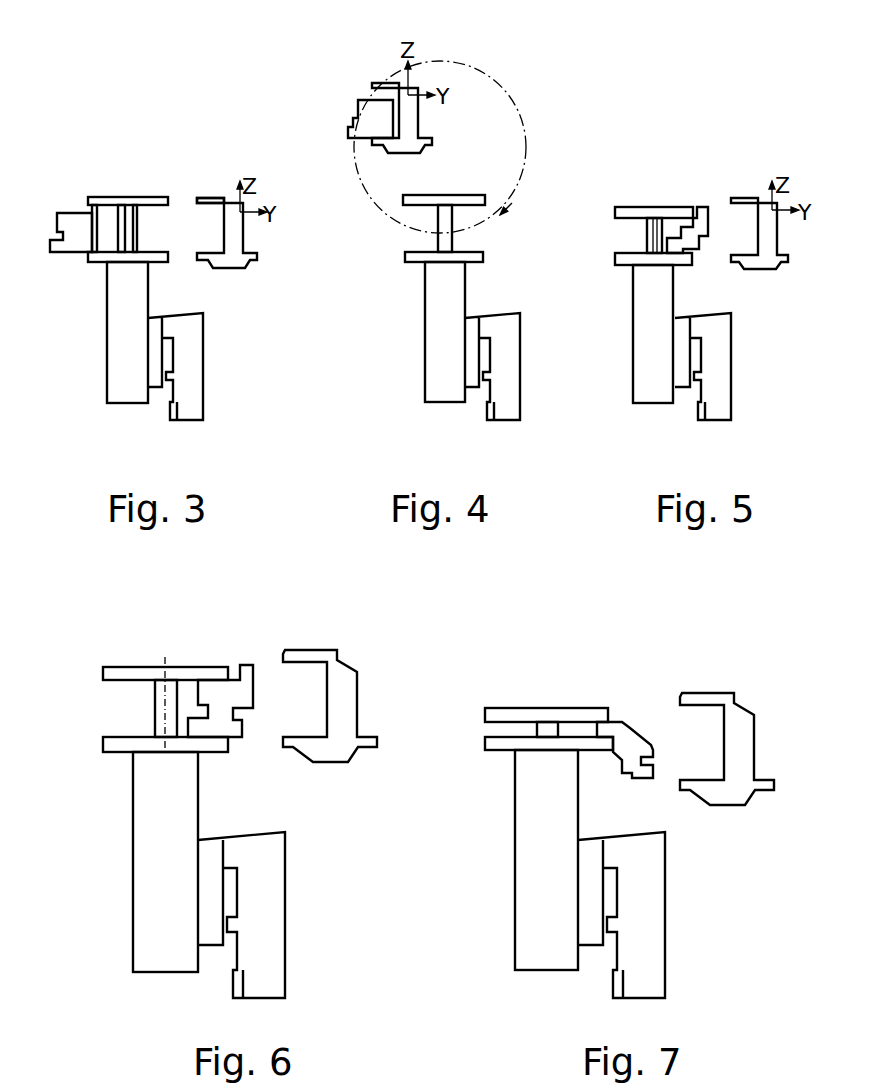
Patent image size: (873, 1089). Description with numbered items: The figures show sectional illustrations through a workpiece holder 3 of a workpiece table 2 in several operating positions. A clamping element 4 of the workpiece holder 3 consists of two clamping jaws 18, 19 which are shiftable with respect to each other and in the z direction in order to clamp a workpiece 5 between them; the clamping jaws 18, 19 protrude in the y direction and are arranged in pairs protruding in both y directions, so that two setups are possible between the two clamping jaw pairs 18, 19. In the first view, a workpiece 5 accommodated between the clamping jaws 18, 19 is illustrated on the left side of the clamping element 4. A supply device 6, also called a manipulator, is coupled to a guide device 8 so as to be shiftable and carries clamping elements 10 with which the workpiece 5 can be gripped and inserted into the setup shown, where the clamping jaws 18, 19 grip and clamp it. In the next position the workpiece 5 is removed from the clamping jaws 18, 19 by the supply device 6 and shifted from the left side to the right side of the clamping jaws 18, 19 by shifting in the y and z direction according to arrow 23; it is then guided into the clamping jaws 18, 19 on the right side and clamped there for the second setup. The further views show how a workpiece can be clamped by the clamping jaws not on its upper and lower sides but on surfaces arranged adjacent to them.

In FIG. 3, the workpiece table 2 is at (90, 355).
In FIG. 4, the workpiece table 2 is at (412, 410).
In FIG. 5, the workpiece table 2 is at (616, 412).
In FIG. 6, the workpiece table 2 is at (142, 895).
In FIG. 7, the workpiece table 2 is at (527, 895).
In FIG. 3, the workpiece holder 3 is at (127, 397).
In FIG. 4, the workpiece holder 3 is at (492, 366).
In FIG. 5, the workpiece holder 3 is at (703, 366).
In FIG. 6, the workpiece holder 3 is at (241, 915).
In FIG. 7, the workpiece holder 3 is at (621, 915).
In FIG. 3, the clamping element 4 is at (138, 163).
In FIG. 3, the workpiece 5 is at (80, 262).
In FIG. 4, the workpiece 5 is at (370, 119).
In FIG. 5, the workpiece 5 is at (706, 207).
In FIG. 6, the workpiece 5 is at (250, 665).
In FIG. 7, the workpiece 5 is at (640, 733).
In FIG. 3, the supply device 6 is at (243, 233).
In FIG. 4, the supply device 6 is at (420, 118).
In FIG. 5, the guide device 8 is at (766, 233).
In FIG. 3, the clamping elements 10 is at (213, 200).
In FIG. 6, the clamping elements 10 is at (342, 665).
In FIG. 7, the clamping elements 10 is at (740, 705).
In FIG. 3, the clamping jaw 18 is at (105, 263).
In FIG. 4, the clamping jaw 18 is at (420, 262).
In FIG. 5, the clamping jaw 18 is at (678, 265).
In FIG. 6, the clamping jaw 18 is at (120, 752).
In FIG. 7, the clamping jaw 18 is at (503, 750).
In FIG. 3, the clamping jaw 19 is at (92, 197).
In FIG. 4, the clamping jaw 19 is at (407, 196).
In FIG. 5, the clamping jaw 19 is at (663, 207).
In FIG. 6, the clamping jaw 19 is at (120, 667).
In FIG. 7, the clamping jaw 19 is at (500, 708).
In FIG. 4, the arrow 23 is at (470, 68).